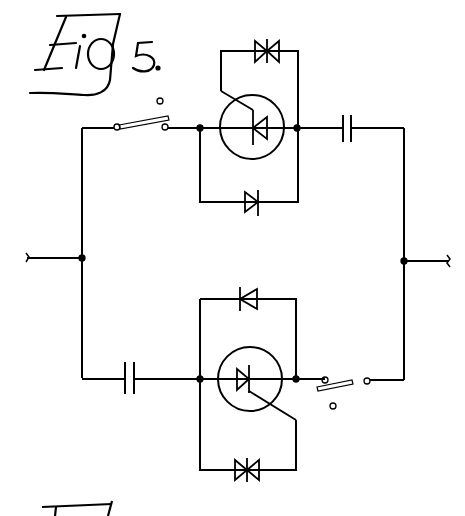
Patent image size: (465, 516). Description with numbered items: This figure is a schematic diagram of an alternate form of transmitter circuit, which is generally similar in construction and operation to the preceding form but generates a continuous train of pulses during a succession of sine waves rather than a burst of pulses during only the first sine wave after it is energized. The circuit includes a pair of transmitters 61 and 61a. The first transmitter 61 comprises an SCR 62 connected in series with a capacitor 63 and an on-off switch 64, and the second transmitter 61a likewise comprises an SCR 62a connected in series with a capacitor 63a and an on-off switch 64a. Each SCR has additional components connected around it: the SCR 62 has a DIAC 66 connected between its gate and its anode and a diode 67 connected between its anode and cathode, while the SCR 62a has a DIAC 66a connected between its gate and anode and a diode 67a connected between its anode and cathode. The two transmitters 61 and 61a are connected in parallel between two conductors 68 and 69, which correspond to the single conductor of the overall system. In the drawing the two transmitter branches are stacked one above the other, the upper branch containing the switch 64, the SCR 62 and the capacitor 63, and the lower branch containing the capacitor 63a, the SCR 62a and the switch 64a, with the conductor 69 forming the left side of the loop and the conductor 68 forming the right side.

The transmitter 61 is at (342, 83).
The SCR 62 is at (273, 103).
The capacitor 63 is at (346, 143).
The on-off switch 64 is at (138, 130).
The DIAC 66 is at (267, 40).
The diode 67 is at (252, 206).
The conductor 68 is at (433, 263).
The conductor 69 is at (60, 262).
The transmitter 61a is at (163, 402).
The SCR 62a is at (263, 351).
The capacitor 63a is at (127, 359).
The on-off switch 64a is at (357, 389).
The DIAC 66a is at (250, 483).
The diode 67a is at (252, 288).